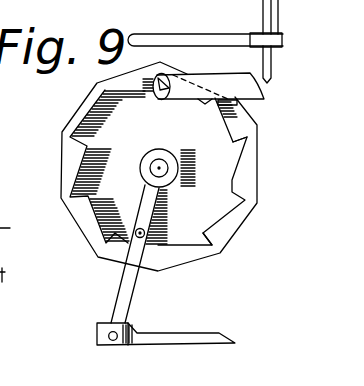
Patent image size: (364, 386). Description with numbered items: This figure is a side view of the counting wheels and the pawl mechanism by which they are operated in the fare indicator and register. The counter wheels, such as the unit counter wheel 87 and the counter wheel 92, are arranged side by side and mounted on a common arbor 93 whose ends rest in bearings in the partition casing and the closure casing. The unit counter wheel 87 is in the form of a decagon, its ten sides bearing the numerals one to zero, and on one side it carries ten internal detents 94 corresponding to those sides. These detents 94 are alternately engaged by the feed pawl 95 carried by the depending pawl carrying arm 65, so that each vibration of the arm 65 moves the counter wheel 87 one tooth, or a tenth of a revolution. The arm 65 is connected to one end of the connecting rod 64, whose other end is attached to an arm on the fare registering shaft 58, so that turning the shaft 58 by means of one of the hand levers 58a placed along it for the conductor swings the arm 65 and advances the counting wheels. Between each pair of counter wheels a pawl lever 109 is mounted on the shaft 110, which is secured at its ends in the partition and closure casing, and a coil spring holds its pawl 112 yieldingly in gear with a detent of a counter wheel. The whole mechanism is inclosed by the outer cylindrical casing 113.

The fare registering shaft 58 is at (262, 10).
The hand lever 58a is at (145, 33).
The outer cylindrical casing 113 is at (293, 0).
The shaft 110 is at (15, 147).
The pawl 112 is at (163, 100).
The pawl lever 109 is at (248, 112).
The internal detent 94 is at (247, 138).
The feed pawl 95 is at (206, 201).
The common arbor 93 is at (150, 168).
The unit counter wheel 87 is at (220, 253).
The depending pawl carrying arm 65 is at (131, 298).
The connecting rod 64 is at (199, 343).
The counter wheel 92 is at (15, 201).